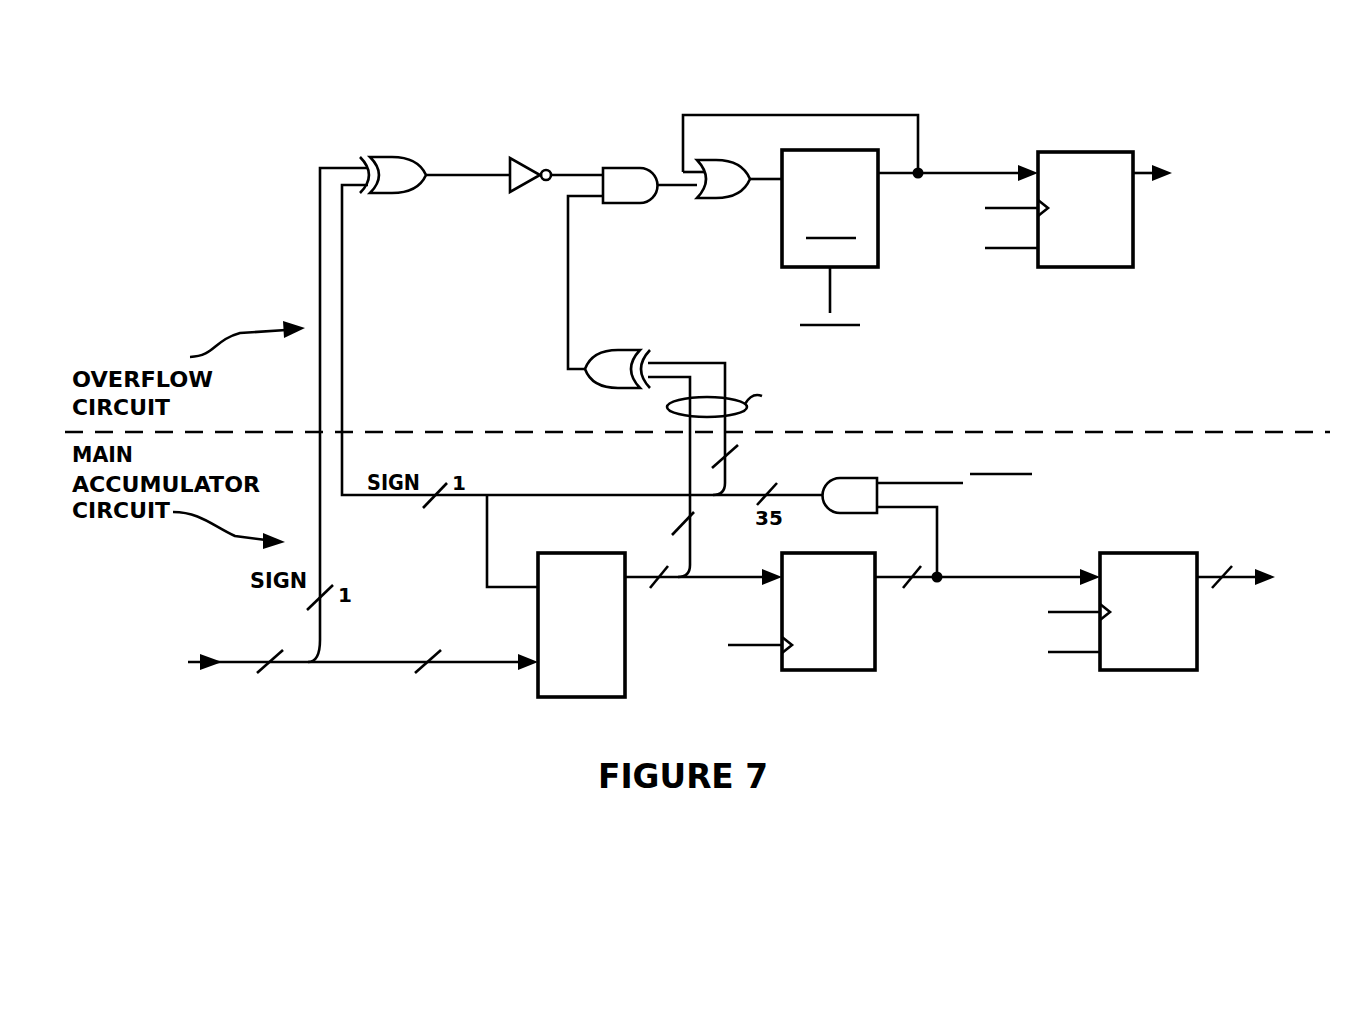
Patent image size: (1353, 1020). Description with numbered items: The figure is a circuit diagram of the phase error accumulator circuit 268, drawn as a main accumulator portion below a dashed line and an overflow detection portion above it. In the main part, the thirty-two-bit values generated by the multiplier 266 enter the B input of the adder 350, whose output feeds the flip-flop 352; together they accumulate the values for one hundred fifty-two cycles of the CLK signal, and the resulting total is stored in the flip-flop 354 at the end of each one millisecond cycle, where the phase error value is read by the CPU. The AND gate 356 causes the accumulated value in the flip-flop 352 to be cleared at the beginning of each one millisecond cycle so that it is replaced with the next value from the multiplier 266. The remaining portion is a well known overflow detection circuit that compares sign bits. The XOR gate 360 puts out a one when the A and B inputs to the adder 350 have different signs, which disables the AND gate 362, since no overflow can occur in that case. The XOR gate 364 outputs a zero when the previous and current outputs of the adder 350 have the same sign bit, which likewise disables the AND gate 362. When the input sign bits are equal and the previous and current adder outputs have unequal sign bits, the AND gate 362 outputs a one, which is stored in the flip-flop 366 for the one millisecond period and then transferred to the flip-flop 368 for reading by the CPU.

The accumulator circuit 268 is at (262, 180).
The multiplier 266 is at (305, 674).
The XOR gate 360 is at (397, 157).
The AND gate 362 is at (632, 268).
The XOR gate 364 is at (625, 350).
The flip-flop 366 is at (860, 233).
The flip-flop 368 is at (1107, 209).
The adder 350 is at (562, 553).
The flip-flop 352 is at (878, 611).
The flip-flop 354 is at (1162, 611).
The AND gate 356 is at (918, 514).